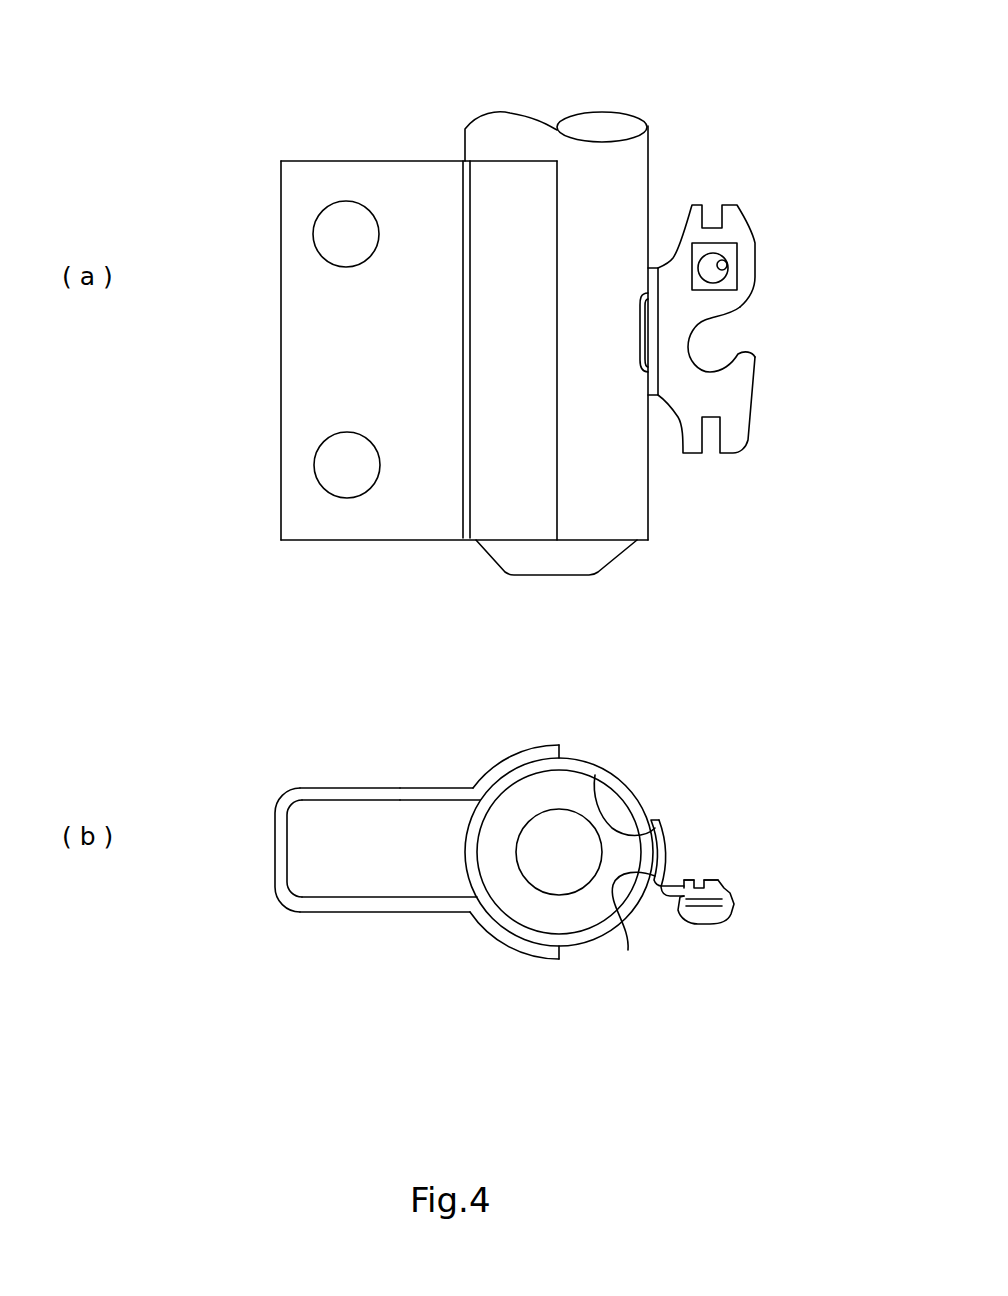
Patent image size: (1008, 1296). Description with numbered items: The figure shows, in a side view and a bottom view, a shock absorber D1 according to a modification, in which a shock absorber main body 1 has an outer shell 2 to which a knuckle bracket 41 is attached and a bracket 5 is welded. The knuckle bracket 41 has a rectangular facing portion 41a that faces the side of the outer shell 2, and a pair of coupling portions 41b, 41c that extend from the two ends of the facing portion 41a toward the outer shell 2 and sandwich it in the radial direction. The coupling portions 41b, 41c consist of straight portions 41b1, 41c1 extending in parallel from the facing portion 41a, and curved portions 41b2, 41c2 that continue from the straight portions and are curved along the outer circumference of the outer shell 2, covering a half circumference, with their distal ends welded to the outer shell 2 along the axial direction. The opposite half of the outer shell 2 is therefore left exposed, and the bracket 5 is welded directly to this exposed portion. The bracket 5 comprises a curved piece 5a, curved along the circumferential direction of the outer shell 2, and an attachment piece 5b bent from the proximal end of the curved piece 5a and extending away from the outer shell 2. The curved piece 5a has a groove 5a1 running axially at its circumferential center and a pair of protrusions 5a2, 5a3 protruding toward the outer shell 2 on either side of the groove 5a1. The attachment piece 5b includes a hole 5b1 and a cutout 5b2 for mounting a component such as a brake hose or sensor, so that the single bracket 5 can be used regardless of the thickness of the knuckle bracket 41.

The shock absorber main body 1 is at (613, 112).
The outer shell 2 is at (635, 173).
The bracket 5 is at (738, 198).
The curved piece 5a is at (660, 332).
The groove 5a1 is at (664, 847).
The protrusion 5a2 is at (595, 775).
The protrusion 5a3 is at (628, 950).
The attachment piece 5b is at (756, 228).
The hole 5b1 is at (730, 262).
The cutout 5b2 is at (730, 352).
The knuckle bracket 41 is at (348, 538).
The facing portion 41a is at (282, 342).
The coupling portion 41b is at (310, 160).
The straight portion 41b1 is at (387, 182).
The curved portion 41b2 is at (513, 183).
The coupling portion 41c is at (353, 910).
The straight portion 41c1 is at (392, 905).
The curved portion 41c2 is at (523, 950).
The shock absorber D1 is at (470, 108).